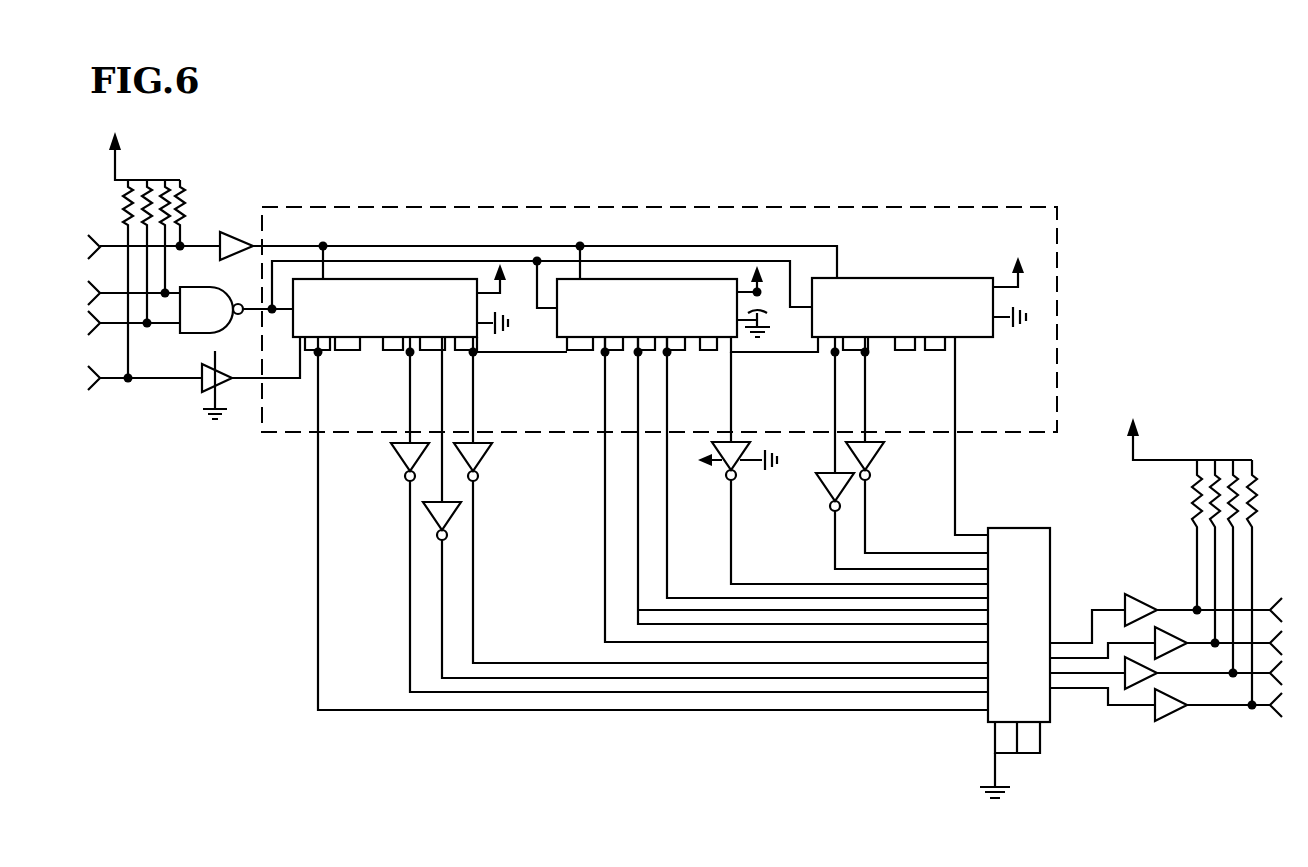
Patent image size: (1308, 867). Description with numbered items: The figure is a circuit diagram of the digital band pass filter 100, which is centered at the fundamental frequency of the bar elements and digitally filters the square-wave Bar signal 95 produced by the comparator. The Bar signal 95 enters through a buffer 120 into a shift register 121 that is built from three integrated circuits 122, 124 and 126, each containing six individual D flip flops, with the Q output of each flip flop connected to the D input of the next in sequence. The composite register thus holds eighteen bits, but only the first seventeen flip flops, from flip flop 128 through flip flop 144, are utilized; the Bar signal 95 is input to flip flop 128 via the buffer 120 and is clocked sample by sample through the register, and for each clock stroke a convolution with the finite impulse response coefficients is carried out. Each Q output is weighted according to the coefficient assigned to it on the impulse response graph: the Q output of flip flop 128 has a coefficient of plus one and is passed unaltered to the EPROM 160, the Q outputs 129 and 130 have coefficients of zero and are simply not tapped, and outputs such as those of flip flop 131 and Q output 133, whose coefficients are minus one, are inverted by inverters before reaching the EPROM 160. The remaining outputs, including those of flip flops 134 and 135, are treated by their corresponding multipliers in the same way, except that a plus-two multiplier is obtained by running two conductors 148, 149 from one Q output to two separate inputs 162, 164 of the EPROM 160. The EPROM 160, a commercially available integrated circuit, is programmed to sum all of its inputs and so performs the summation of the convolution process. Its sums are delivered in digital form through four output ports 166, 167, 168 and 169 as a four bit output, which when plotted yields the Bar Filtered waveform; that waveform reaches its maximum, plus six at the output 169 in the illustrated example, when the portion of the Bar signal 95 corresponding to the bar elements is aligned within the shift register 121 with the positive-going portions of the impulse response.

The band pass filter 100 is at (911, 158).
The Bar signal 95 is at (133, 378).
The buffer 120 is at (200, 392).
The shift register 121 is at (500, 203).
The integrated circuit 122 is at (386, 304).
The integrated circuit 124 is at (640, 306).
The integrated circuit 126 is at (900, 306).
The flip flop 128 is at (314, 332).
The Q output 129 is at (342, 326).
The Q output 130 is at (394, 341).
The flip flop 131 is at (412, 336).
The Q output 133 is at (442, 322).
The flip flop 134 is at (592, 336).
The flip flop 135 is at (626, 318).
The flip flop 144 is at (940, 334).
The conductor 148 is at (666, 623).
The conductor 149 is at (686, 614).
The EPROM 160 is at (1036, 554).
The input 162 is at (990, 612).
The input 164 is at (992, 626).
The output port 166 is at (1053, 690).
The output port 167 is at (1058, 678).
The output port 168 is at (1052, 657).
The output port 169 is at (1052, 642).